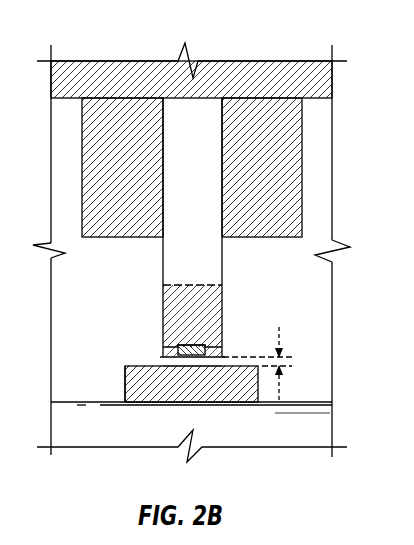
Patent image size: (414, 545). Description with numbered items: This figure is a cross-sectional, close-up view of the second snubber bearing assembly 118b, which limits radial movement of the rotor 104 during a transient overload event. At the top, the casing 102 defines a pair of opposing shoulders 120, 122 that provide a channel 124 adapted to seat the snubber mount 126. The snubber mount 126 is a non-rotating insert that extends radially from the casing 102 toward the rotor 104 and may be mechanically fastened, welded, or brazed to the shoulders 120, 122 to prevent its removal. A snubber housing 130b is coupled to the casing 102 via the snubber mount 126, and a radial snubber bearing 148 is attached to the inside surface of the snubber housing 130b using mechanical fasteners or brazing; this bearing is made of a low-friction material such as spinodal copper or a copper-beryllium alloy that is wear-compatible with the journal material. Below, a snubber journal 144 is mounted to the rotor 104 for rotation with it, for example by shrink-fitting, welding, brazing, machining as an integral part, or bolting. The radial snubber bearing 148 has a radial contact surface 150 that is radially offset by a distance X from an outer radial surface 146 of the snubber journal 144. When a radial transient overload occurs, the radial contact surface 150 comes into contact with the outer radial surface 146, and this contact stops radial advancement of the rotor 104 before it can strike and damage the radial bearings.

The casing 102 is at (262, 66).
The rotor 104 is at (82, 448).
The shoulder 120 is at (82, 190).
The shoulder 122 is at (302, 160).
The channel 124 is at (197, 100).
The snubber mount 126 is at (208, 204).
The second snubber bearing assembly 118b is at (125, 299).
The snubber housing 130b is at (218, 308).
The radial snubber bearing 148 is at (163, 354).
The snubber journal 144 is at (250, 372).
The outer radial surface 146 is at (168, 362).
The radial contact surface 150 is at (200, 358).
The distance X is at (281, 339).